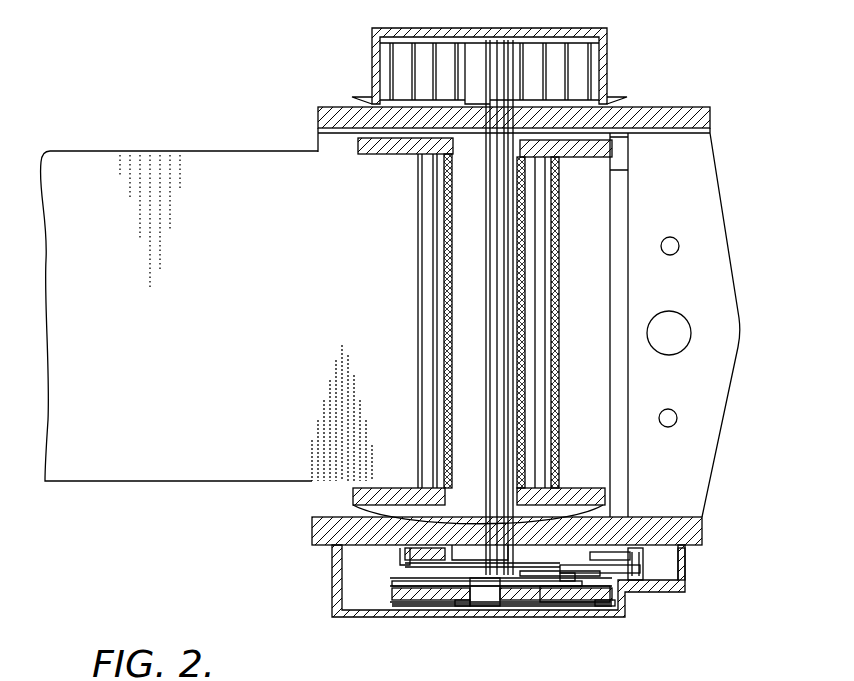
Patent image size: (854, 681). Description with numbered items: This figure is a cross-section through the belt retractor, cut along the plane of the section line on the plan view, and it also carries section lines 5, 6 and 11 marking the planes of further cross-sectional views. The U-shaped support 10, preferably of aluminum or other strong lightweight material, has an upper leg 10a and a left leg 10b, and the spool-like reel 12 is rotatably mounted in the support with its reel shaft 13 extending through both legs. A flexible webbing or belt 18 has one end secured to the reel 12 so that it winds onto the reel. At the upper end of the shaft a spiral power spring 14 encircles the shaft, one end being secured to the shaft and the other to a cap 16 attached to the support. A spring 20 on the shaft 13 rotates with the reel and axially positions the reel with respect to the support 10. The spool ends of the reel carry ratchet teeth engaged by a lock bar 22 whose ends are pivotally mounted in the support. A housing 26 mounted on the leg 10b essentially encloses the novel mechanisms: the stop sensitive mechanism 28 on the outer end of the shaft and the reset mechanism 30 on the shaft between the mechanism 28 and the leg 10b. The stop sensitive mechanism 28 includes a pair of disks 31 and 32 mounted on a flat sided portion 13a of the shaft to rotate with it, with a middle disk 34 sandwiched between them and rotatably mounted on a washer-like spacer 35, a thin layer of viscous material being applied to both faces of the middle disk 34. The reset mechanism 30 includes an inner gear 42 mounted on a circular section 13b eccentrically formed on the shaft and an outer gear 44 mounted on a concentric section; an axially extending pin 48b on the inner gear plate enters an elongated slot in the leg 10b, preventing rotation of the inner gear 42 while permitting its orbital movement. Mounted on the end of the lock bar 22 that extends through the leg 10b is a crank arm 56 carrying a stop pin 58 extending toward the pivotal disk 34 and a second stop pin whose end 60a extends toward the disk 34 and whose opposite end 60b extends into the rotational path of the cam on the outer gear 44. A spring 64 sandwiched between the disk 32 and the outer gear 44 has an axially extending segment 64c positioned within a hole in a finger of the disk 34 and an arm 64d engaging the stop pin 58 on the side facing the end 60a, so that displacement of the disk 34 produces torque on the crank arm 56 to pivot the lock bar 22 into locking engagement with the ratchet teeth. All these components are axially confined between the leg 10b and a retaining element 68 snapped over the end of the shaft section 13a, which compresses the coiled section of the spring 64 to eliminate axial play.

The section line 5- 5 is at (329, 28).
The section line 6- 6 is at (269, 566).
The section line 11- 11 is at (269, 603).
The U-shaped support 10 is at (716, 196).
The upper frame plate 10a is at (710, 112).
The support leg 10b is at (700, 531).
The reel 12 is at (603, 151).
The reel shaft 13 is at (502, 50).
The flat sided portion of the shaft 13a is at (478, 606).
The eccentric circular section of the shaft 13b is at (465, 545).
The spiral power spring 14 is at (563, 52).
The cap 16 is at (600, 62).
The belt 18 is at (254, 158).
The spring 20 is at (435, 515).
The lock bar 22 is at (622, 500).
The housing 26 is at (688, 560).
The stop sensitive mechanism 28 is at (350, 614).
The reset mechanism 30 is at (388, 560).
The disk 31 is at (440, 604).
The disk 32 is at (395, 604).
The middle disk 34 is at (415, 600).
The spacer 35 is at (452, 602).
The inner gear 42 is at (405, 556).
The outer gear 44 is at (405, 575).
The pin 48b is at (572, 517).
The crank arm 56 is at (598, 560).
The stop pin 58 is at (590, 602).
The end of stop pin 60a is at (610, 610).
The end of stop pin 60b is at (655, 552).
The spring 64 is at (525, 602).
The axially extending segment 64c is at (575, 600).
The spring arm 64d is at (600, 606).
The retaining element 68 is at (515, 606).